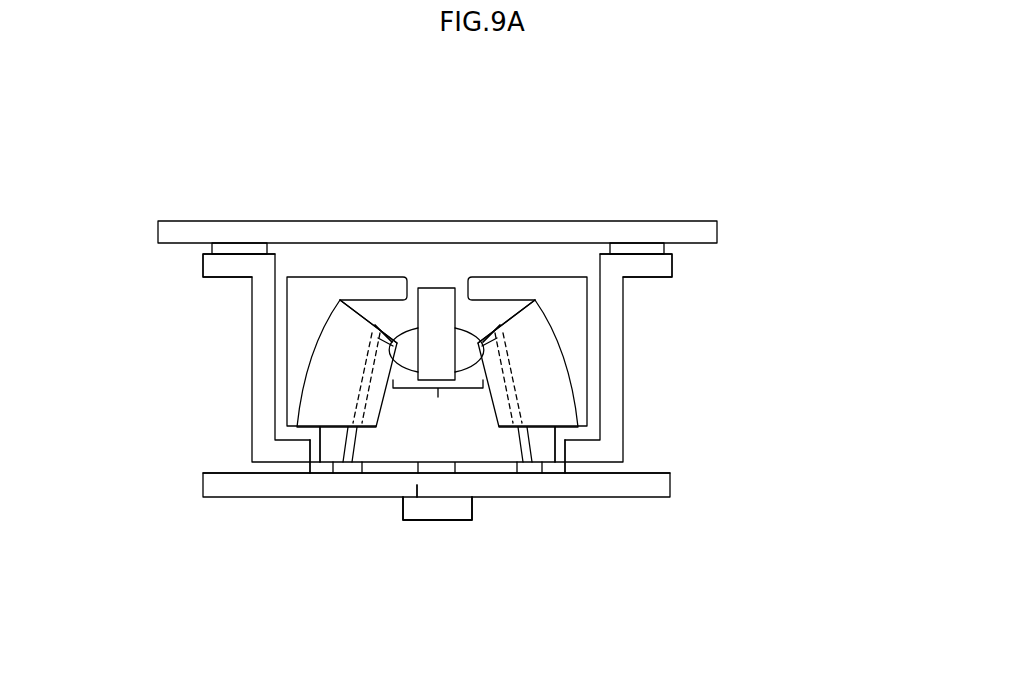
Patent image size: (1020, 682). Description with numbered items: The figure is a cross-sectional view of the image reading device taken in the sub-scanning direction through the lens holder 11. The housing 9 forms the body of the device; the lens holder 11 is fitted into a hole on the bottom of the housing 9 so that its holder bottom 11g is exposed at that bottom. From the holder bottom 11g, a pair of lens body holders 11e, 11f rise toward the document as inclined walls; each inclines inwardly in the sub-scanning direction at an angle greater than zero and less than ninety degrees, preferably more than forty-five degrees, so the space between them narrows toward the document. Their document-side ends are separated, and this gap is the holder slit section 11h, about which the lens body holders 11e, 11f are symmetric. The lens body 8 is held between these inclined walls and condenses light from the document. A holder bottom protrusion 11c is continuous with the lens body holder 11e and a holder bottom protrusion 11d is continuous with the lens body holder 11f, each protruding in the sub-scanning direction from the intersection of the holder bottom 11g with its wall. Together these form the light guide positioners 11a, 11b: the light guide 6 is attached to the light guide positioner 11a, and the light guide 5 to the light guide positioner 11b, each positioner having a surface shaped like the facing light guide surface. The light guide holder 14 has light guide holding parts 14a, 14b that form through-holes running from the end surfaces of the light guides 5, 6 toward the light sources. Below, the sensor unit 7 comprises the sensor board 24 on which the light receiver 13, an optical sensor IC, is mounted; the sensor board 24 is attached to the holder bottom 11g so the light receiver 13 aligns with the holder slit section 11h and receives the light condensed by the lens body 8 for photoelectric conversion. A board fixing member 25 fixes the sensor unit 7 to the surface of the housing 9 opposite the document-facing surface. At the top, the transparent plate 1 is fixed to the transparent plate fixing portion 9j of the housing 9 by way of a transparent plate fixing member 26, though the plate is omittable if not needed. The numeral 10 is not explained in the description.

The transparent plate 1 is at (687, 232).
The light guide 5 is at (550, 400).
The light guide 6 is at (315, 393).
The sensor unit 7 is at (427, 608).
The lens body 8 is at (440, 310).
The housing 9 is at (267, 355).
The transparent plate fixing portion 9j is at (217, 273).
The coil 10 is at (403, 320).
The lens holder 11 is at (475, 462).
The light guide positioner 11a is at (318, 465).
The light guide positioner 11b is at (542, 463).
The holder bottom protrusion 11c is at (333, 463).
The holder bottom protrusion 11d is at (560, 465).
The lens body holder 11e is at (383, 337).
The lens body holder 11f is at (492, 335).
The holder bottom 11g is at (407, 455).
The holder slit section 11h is at (438, 400).
The light receiver 13 is at (457, 468).
The light guide holder 14 is at (325, 298).
The light guide holding part 14a is at (317, 337).
The light guide holding part 14b is at (560, 347).
The sensor board 24 is at (417, 485).
The board fixing member 25 is at (205, 494).
The transparent plate fixing member 26 is at (233, 250).